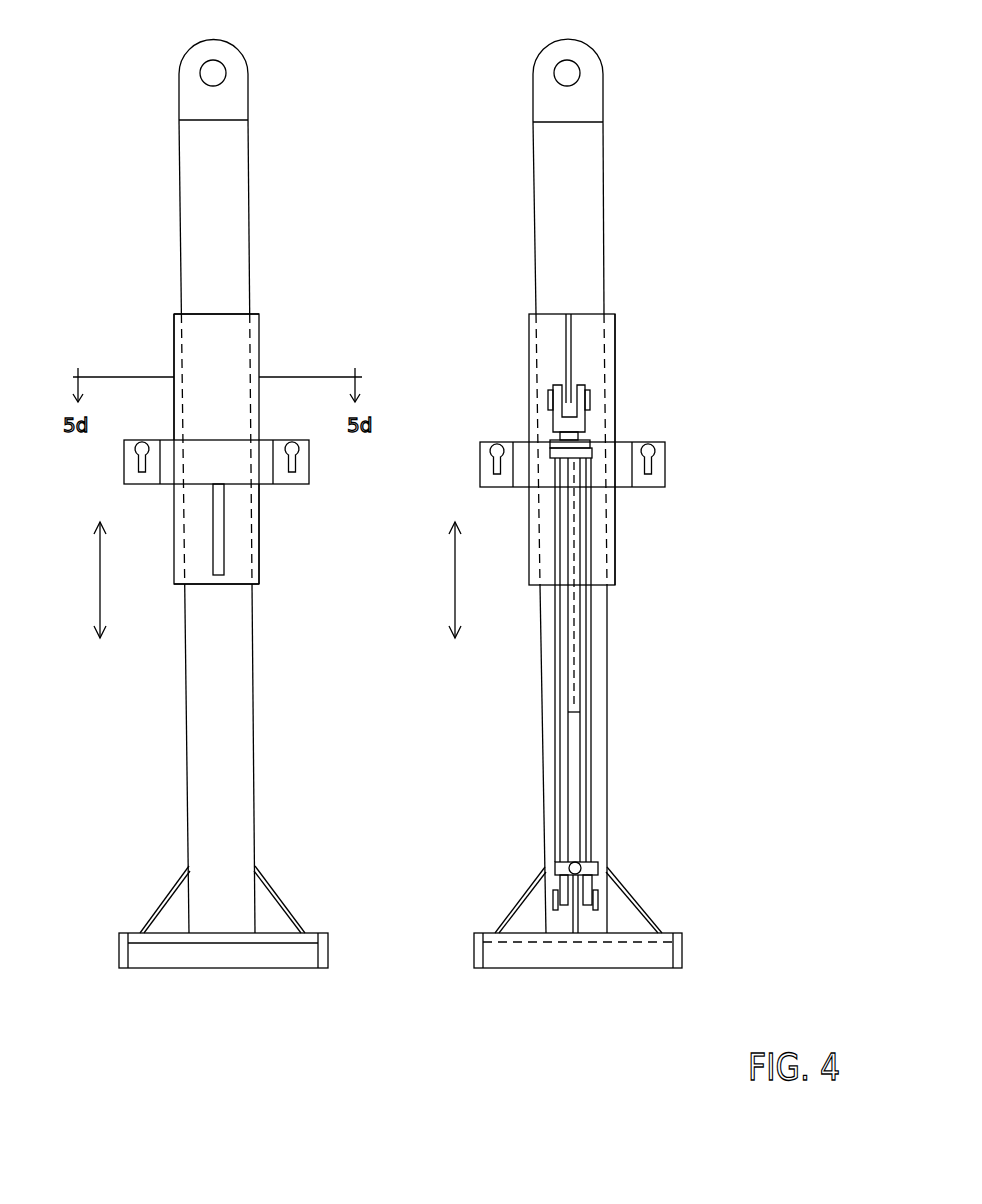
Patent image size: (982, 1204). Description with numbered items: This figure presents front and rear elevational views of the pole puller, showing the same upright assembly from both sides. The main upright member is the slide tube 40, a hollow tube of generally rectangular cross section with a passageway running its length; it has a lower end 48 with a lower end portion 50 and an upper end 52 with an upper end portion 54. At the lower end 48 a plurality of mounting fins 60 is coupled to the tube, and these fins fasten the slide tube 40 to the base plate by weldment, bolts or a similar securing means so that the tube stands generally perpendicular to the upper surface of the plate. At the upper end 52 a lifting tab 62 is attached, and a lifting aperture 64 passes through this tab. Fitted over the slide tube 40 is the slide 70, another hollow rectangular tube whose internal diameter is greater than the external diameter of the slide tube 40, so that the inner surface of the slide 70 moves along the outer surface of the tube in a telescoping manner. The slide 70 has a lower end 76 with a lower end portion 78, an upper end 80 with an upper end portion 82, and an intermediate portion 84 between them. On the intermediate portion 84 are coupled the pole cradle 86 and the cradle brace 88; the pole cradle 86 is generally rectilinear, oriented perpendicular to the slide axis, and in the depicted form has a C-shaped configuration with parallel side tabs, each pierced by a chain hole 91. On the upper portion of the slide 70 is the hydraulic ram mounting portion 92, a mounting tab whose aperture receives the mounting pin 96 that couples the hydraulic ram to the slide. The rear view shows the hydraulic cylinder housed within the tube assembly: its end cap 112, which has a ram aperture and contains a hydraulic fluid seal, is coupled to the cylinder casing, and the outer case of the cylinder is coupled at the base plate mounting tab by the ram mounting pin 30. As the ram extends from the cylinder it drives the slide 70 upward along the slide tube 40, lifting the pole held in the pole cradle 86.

The ram mounting pin 30 is at (600, 898).
The slide tube 40 is at (620, 230).
The lower end 48 is at (247, 923).
The lower end portion 50 is at (233, 795).
The upper end 52 is at (245, 120).
The upper end portion 54 is at (230, 170).
The mounting fins 60 is at (172, 920).
The lifting tab 62 is at (237, 83).
The lifting aperture 64 is at (215, 72).
The slide 70 is at (267, 360).
The lower end 76 is at (260, 585).
The lower end portion 78 is at (253, 567).
The upper end 80 is at (256, 316).
The upper end portion 82 is at (195, 357).
The intermediate portion 84 is at (598, 463).
The pole cradle 86 is at (207, 470).
The cradle brace 88 is at (220, 528).
The chain hole 91 is at (295, 450).
The hydraulic ram mounting portion 92 is at (570, 363).
The mounting pin 96 is at (550, 400).
The end cap 112 is at (550, 440).